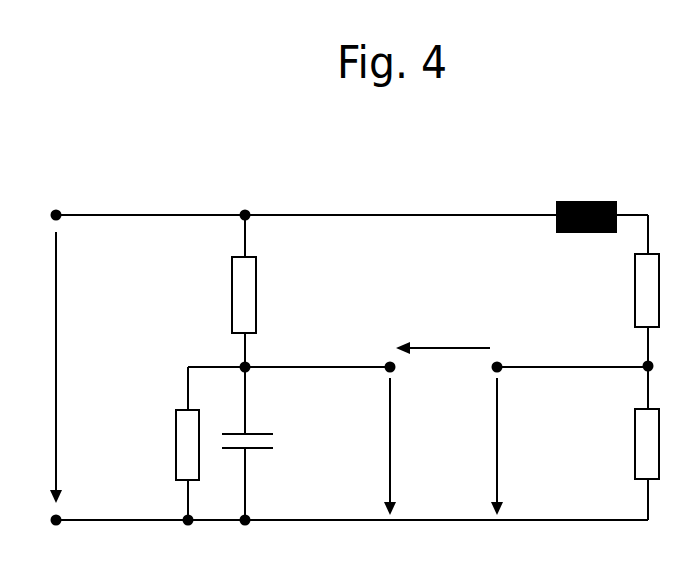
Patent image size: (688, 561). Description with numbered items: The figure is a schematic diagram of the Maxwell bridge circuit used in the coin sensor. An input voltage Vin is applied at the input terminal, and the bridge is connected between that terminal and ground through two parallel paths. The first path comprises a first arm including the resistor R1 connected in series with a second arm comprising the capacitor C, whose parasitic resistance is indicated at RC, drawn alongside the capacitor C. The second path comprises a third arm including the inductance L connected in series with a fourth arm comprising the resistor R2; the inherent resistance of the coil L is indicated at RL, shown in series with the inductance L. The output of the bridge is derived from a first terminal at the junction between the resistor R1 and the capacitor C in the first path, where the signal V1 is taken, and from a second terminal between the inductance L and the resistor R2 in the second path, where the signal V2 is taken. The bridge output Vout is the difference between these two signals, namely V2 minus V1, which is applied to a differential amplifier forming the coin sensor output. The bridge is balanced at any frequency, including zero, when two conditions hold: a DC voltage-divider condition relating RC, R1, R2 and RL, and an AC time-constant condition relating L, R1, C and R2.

The input voltage Vin is at (41, 367).
The resistor R1 is at (255, 291).
The parasitic resistance of capacitor RC is at (171, 443).
The capacitor C is at (261, 443).
The inductance L is at (586, 199).
The inherent resistance of coil RL is at (631, 290).
The resistor R2 is at (630, 444).
The first terminal voltage V1 is at (378, 446).
The second terminal voltage V2 is at (512, 446).
The bridge output voltage Vout is at (447, 338).